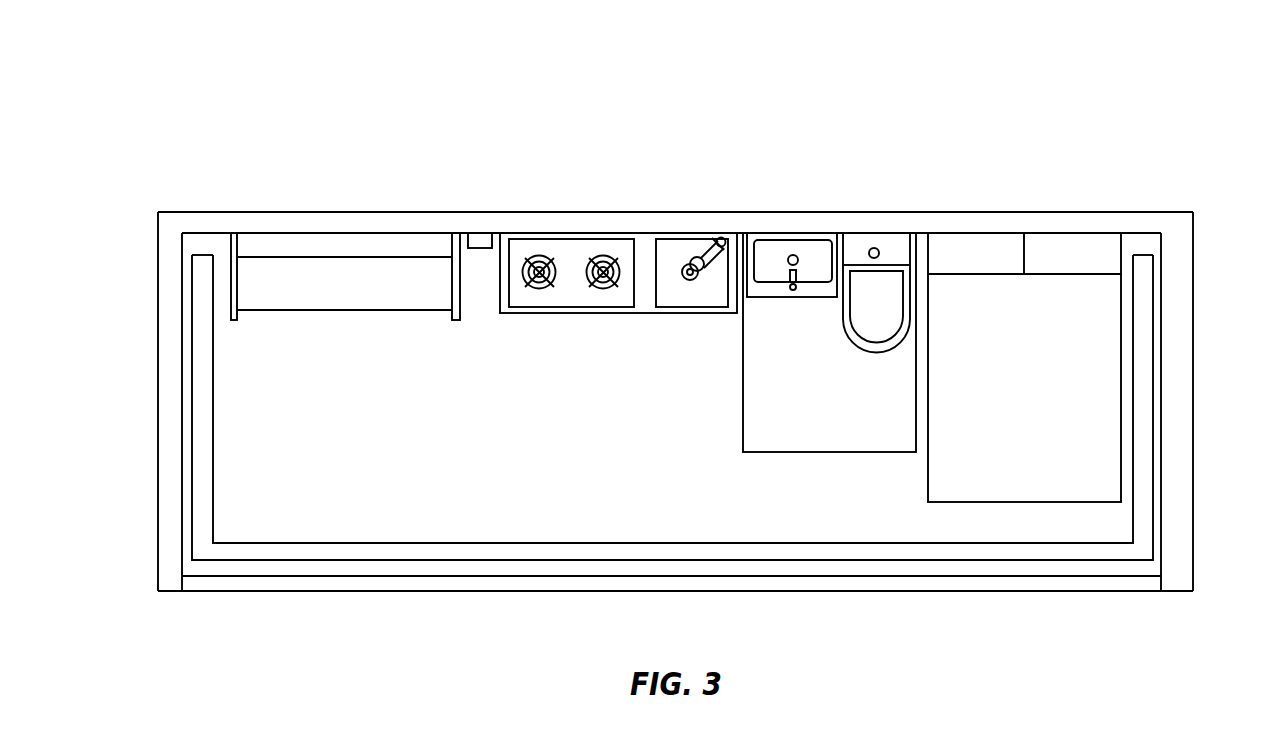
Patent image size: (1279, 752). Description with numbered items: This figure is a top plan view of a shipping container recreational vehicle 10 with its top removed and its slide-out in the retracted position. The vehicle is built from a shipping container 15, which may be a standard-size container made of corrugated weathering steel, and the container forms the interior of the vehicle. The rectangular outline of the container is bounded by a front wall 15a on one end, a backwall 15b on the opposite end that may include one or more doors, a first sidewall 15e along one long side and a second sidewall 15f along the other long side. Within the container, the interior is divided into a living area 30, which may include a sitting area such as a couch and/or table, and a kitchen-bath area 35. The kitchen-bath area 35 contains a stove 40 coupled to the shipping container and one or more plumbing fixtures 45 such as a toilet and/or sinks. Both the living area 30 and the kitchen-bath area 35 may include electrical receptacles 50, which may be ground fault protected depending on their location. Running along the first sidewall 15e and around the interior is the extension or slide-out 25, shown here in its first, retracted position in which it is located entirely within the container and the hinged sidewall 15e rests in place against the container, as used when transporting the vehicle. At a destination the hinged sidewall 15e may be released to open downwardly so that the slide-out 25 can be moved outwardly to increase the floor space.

The shipping container recreational vehicle 10 is at (220, 122).
The shipping container 15 is at (158, 408).
The front wall 15a is at (168, 332).
The backwall 15b is at (1182, 399).
The first sidewall 15e is at (975, 583).
The second sidewall 15f is at (972, 218).
The extension or slide-out 25 is at (230, 555).
The living area 30 is at (457, 201).
The kitchen-bath area 35 is at (915, 200).
The stove 40 is at (567, 295).
The plumbing fixtures 45 is at (693, 290).
The electrical receptacles 50 is at (480, 240).